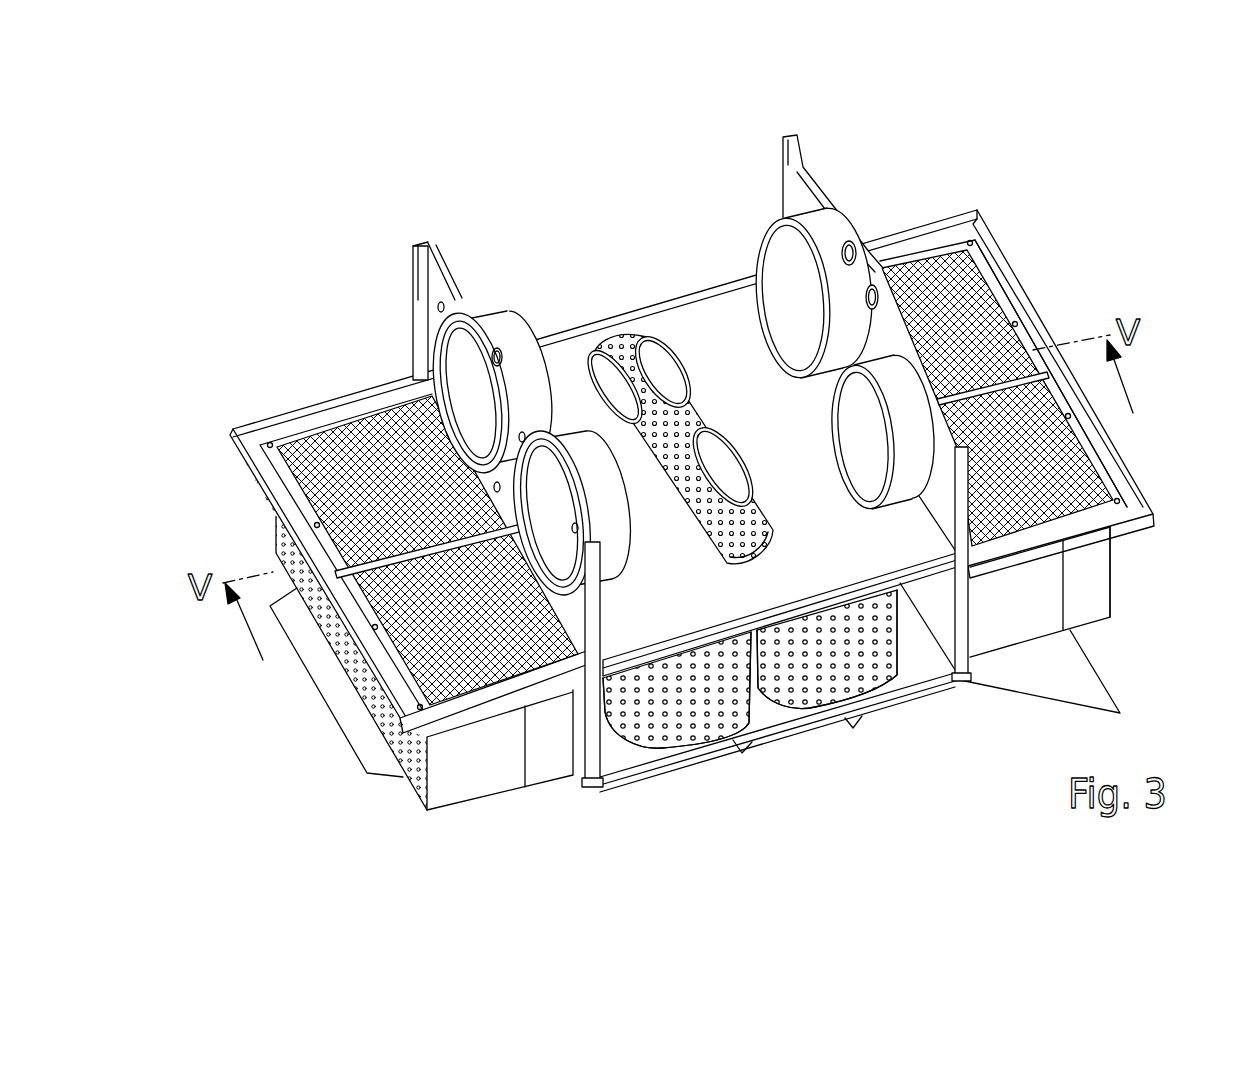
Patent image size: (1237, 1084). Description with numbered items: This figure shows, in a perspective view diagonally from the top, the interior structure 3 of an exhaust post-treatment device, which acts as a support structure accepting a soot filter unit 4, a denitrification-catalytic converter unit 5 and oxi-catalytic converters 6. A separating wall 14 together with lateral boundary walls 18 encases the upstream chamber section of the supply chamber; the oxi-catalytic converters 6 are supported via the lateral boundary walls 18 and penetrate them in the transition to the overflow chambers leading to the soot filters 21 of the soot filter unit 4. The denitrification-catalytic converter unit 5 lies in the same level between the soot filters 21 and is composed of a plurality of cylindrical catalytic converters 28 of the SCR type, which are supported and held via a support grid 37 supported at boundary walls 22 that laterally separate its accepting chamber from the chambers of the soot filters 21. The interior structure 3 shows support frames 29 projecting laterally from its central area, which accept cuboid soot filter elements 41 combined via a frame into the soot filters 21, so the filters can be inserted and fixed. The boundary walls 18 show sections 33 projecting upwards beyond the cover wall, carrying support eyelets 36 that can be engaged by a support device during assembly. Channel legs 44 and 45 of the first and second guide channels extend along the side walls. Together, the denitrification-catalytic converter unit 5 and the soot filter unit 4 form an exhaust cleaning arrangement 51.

The interior structure 3 is at (808, 166).
The soot filter unit 4 is at (506, 800).
The denitrification-catalytic converter unit 5 is at (852, 730).
The oxi-catalytic converters 6 is at (779, 304).
The separating wall 14 is at (812, 541).
The lateral boundary walls 18 is at (937, 513).
The soot filters 21 is at (323, 455).
The boundary walls 22 is at (923, 614).
The cylindrical catalytic converters 28 is at (650, 362).
The support frames 29 is at (260, 427).
The section 33 is at (875, 285).
The support eyelets 36 is at (850, 241).
The support grid 37 is at (648, 765).
The soot filter elements 41 is at (1093, 481).
The channel leg 44 is at (322, 682).
The channel leg 45 is at (1083, 673).
The exhaust cleaning arrangement 51 is at (1128, 604).